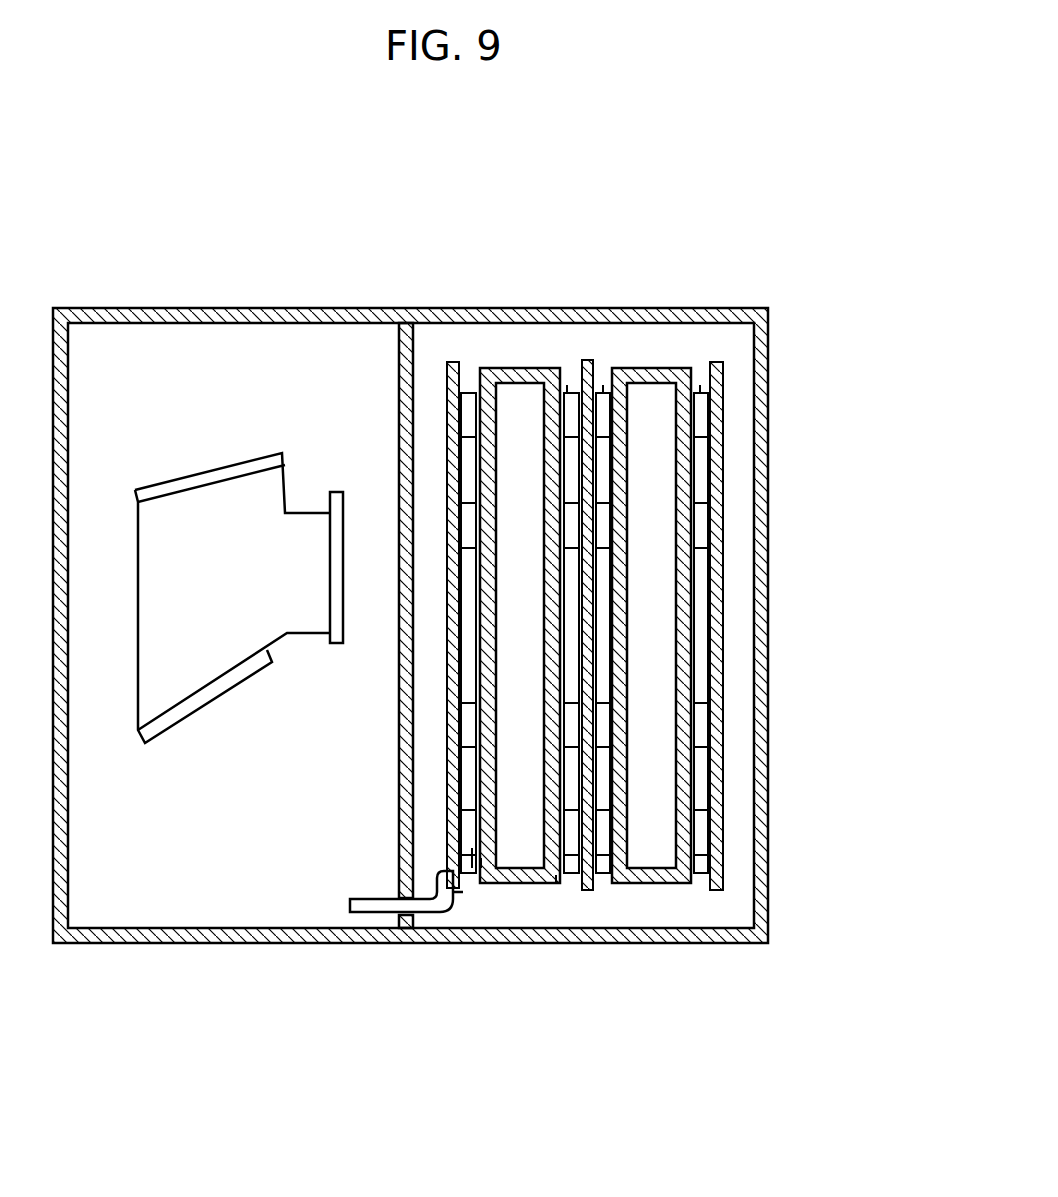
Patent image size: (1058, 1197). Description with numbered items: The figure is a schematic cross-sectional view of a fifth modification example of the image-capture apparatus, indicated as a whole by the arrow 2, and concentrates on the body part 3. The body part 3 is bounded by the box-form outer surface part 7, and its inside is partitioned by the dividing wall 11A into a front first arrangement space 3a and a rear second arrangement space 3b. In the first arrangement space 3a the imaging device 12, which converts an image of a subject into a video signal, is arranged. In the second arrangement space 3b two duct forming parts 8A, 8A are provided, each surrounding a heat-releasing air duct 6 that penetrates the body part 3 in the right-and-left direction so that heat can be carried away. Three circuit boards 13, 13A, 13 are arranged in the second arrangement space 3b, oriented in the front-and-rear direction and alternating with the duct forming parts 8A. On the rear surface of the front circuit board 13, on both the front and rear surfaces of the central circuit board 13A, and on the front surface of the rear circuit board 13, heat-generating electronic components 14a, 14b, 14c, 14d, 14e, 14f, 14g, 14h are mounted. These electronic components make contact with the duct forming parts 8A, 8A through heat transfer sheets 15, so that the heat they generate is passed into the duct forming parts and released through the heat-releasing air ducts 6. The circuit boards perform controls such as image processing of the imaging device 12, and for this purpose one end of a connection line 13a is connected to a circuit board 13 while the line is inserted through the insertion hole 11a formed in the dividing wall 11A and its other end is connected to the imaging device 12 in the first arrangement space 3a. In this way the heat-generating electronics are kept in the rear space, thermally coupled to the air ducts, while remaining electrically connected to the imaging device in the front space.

The battery module 2 is at (641, 188).
The body part 3 is at (452, 625).
The first arrangement space 3a is at (277, 775).
The second arrangement space 3b is at (657, 918).
The heat-releasing air duct 6 is at (594, 554).
The outer surface part 7 is at (768, 768).
The duct forming part 8A is at (481, 368).
The dividing wall 11A is at (398, 383).
The insertion hole 11a is at (405, 918).
The imaging device 12 is at (188, 716).
The circuit board 13 is at (448, 362).
The circuit board 13A is at (586, 360).
The connection line 13a is at (373, 905).
The electronic component 14a is at (468, 393).
The electronic component 14b is at (470, 527).
The electronic component 14c is at (470, 727).
The electronic component 14d is at (472, 852).
The electronic component 14e is at (567, 392).
The electronic component 14f is at (571, 527).
The electronic component 14g is at (571, 730).
The electronic component 14h is at (570, 855).
The heat transfer sheet 15 is at (603, 392).